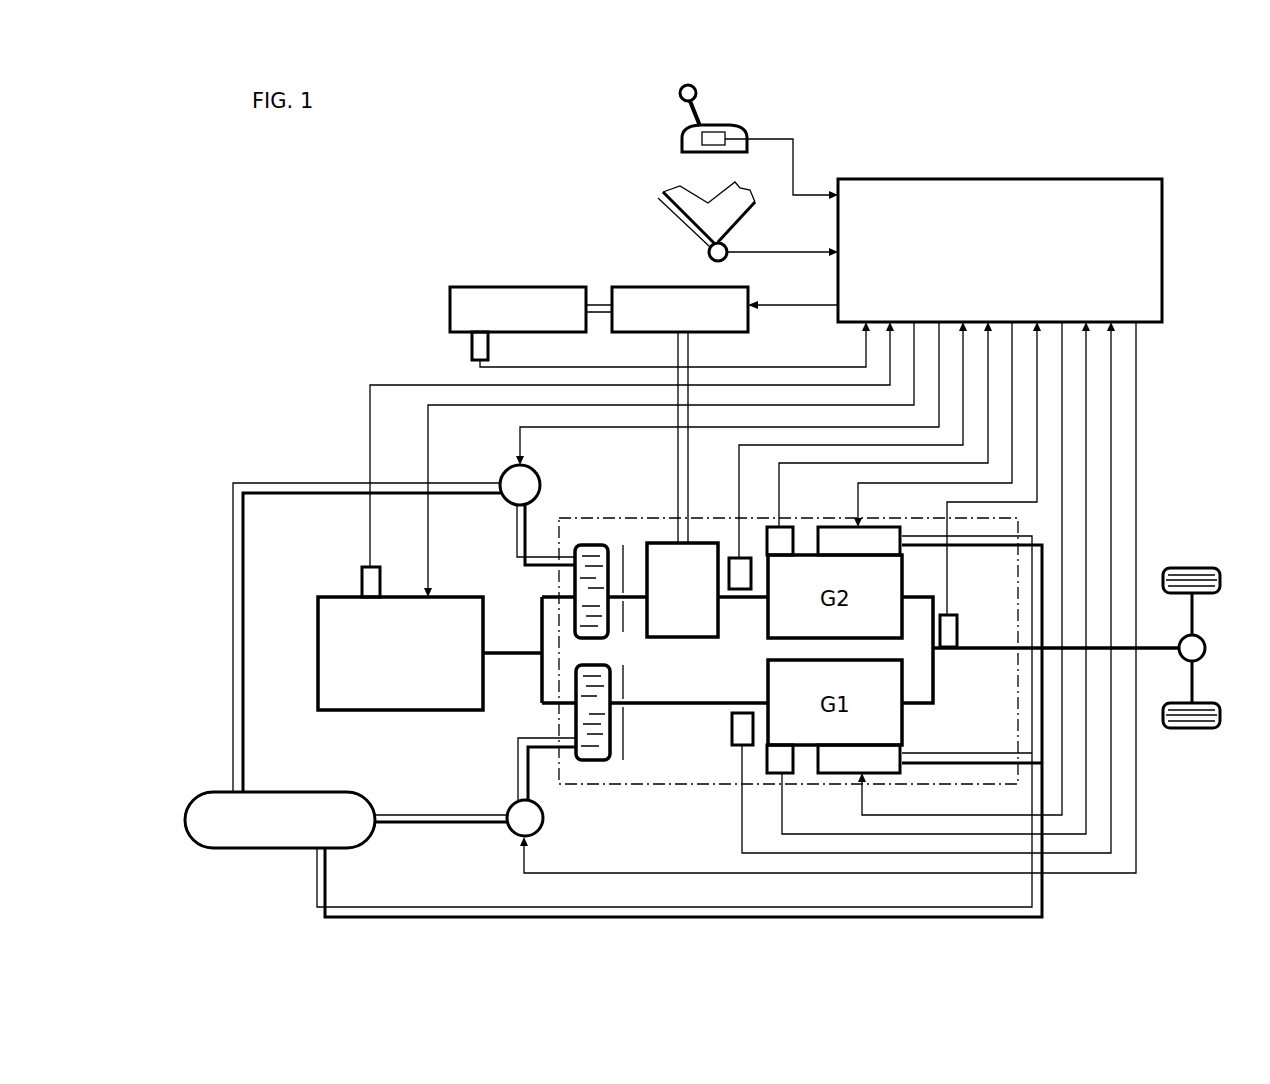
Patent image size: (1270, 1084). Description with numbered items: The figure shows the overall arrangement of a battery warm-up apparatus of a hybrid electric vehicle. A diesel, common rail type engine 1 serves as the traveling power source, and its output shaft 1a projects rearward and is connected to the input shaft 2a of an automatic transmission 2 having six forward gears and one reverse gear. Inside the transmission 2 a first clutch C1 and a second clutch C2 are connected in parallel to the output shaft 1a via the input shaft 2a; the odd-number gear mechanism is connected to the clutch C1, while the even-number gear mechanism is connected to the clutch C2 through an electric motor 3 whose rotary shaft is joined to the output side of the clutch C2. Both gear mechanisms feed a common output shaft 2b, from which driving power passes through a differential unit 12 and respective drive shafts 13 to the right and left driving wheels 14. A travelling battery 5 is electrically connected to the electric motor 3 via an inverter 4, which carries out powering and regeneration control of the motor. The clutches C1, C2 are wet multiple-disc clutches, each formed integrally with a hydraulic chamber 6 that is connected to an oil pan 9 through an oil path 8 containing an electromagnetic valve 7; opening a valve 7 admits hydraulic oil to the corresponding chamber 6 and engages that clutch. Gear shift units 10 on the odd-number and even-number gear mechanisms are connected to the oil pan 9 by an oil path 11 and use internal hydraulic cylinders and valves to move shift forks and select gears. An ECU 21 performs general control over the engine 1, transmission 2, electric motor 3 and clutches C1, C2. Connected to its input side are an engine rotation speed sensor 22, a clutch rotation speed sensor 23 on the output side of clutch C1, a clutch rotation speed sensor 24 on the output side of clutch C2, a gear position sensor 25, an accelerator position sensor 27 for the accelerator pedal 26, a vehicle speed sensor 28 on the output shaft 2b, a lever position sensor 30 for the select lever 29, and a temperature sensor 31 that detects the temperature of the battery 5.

The engine 1 is at (362, 712).
The output shaft 1a is at (513, 650).
The automatic transmission 2 is at (618, 512).
The input shaft 2a is at (548, 593).
The output shaft 2b is at (990, 652).
The electric motor 3 is at (657, 543).
The inverter 4 is at (627, 287).
The travelling battery 5 is at (466, 287).
The hydraulic chamber 6 is at (590, 548).
The electromagnetic valve 7 is at (507, 472).
The oil path 8 is at (232, 624).
The oil pan 9 is at (185, 818).
The gear shift unit 10 is at (831, 527).
The oil path 11 is at (958, 752).
The differential unit 12 is at (1207, 650).
The drive shaft 13 is at (1194, 614).
The driving wheel 14 is at (1221, 580).
The ECU 21 is at (1162, 205).
The engine rotation speed sensor 22 is at (362, 578).
The clutch rotation speed sensor 23 is at (738, 748).
The clutch rotation speed sensor 24 is at (733, 556).
The gear position sensor 25 is at (775, 527).
The accelerator pedal 26 is at (658, 205).
The accelerator position sensor 27 is at (710, 256).
The vehicle speed sensor 28 is at (958, 628).
The select lever 29 is at (686, 116).
The lever position sensor 30 is at (718, 130).
The temperature sensor 31 is at (472, 348).
The first clutch C1 is at (625, 745).
The second clutch C2 is at (625, 625).